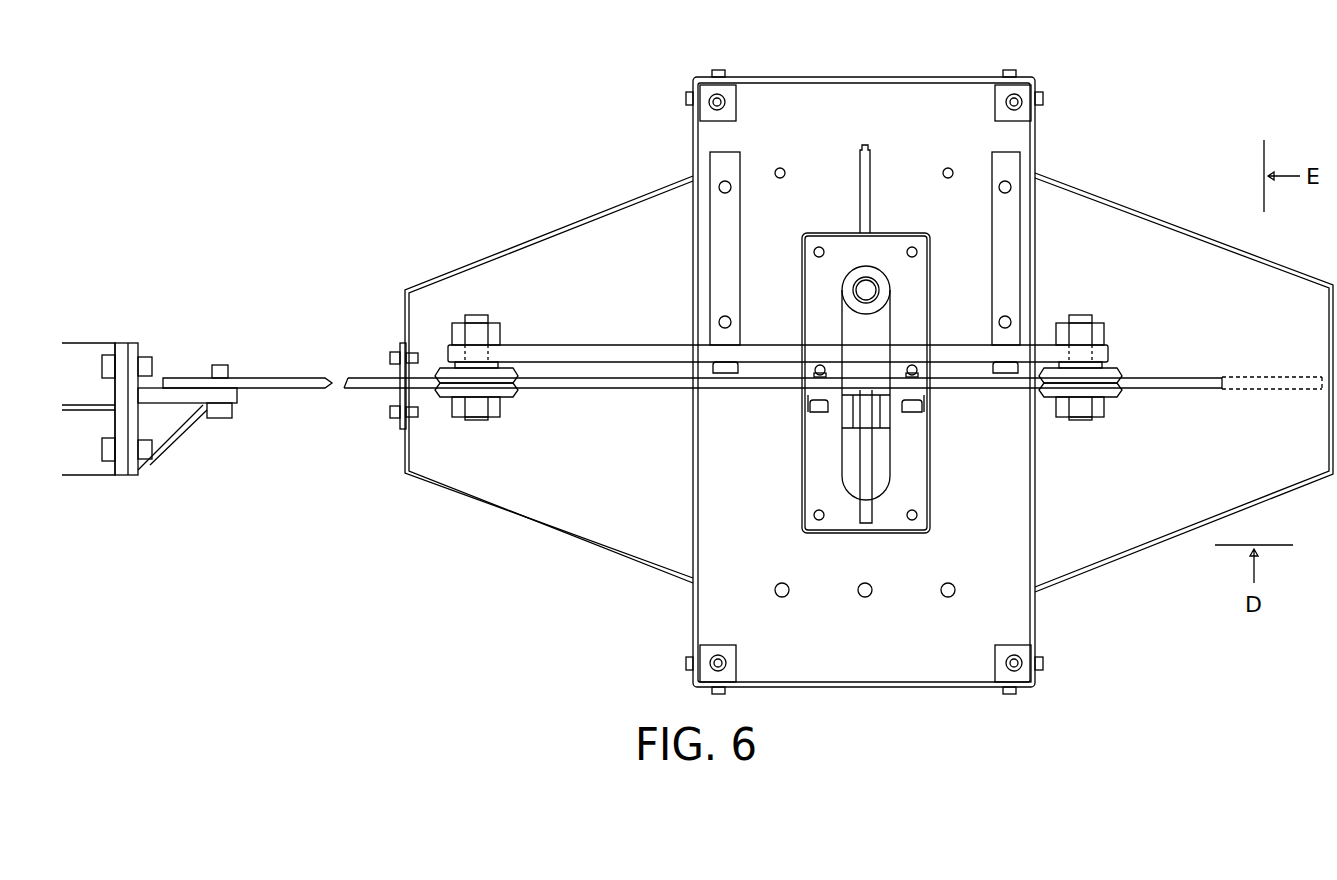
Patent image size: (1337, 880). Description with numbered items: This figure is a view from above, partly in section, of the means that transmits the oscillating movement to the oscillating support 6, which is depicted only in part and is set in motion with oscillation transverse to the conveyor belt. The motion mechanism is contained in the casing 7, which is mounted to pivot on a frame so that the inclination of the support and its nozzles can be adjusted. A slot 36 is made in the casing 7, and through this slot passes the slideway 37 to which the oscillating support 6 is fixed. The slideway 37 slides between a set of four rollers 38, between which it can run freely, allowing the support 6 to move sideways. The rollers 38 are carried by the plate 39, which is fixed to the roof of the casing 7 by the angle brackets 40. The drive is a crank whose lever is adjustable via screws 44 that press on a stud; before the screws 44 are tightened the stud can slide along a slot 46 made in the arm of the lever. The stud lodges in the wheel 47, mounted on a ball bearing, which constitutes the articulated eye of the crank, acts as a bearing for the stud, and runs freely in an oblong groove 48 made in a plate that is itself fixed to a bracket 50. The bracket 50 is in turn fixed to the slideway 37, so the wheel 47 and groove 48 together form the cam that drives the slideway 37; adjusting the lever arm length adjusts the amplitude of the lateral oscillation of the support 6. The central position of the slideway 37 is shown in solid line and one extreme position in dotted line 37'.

The oscillating support 6 is at (199, 437).
The casing 7 is at (572, 550).
The slot 36 is at (397, 395).
The slideway 37 is at (692, 358).
The extreme position of the slideway 37' is at (1272, 354).
The rollers 38 is at (462, 410).
The plate 39 is at (634, 352).
The angle brackets 40 is at (732, 163).
The screws 44 is at (865, 145).
The slot 46 is at (870, 330).
The wheel 47 is at (858, 292).
The oblong groove 48 is at (876, 465).
The bracket 50 is at (865, 450).